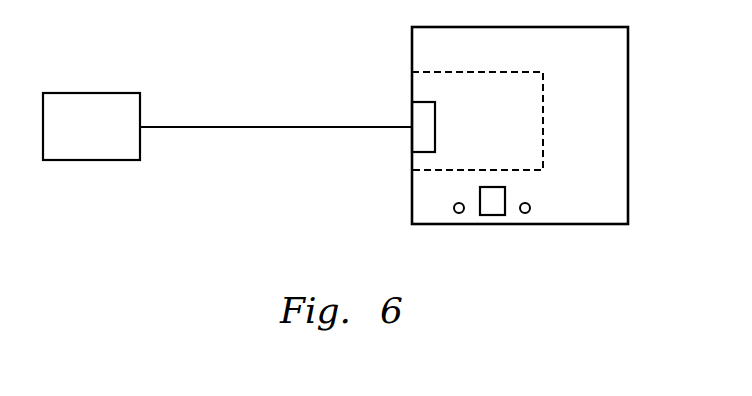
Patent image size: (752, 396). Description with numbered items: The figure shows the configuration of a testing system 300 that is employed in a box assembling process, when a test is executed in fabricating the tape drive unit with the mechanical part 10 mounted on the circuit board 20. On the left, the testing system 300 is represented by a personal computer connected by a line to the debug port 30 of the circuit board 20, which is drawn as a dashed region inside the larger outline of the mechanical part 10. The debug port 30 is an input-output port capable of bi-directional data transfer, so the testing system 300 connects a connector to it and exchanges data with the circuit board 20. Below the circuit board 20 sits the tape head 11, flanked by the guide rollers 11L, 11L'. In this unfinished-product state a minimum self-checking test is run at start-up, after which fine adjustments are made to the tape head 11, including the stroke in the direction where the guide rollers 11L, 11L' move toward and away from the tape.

The testing system 300 is at (119, 92).
The mechanical part 10 is at (617, 126).
The circuit board 20 is at (544, 94).
The debug port 30 is at (423, 110).
The tape head 11 is at (505, 190).
The guide roller 11L is at (442, 235).
The guide roller 11L' is at (547, 235).